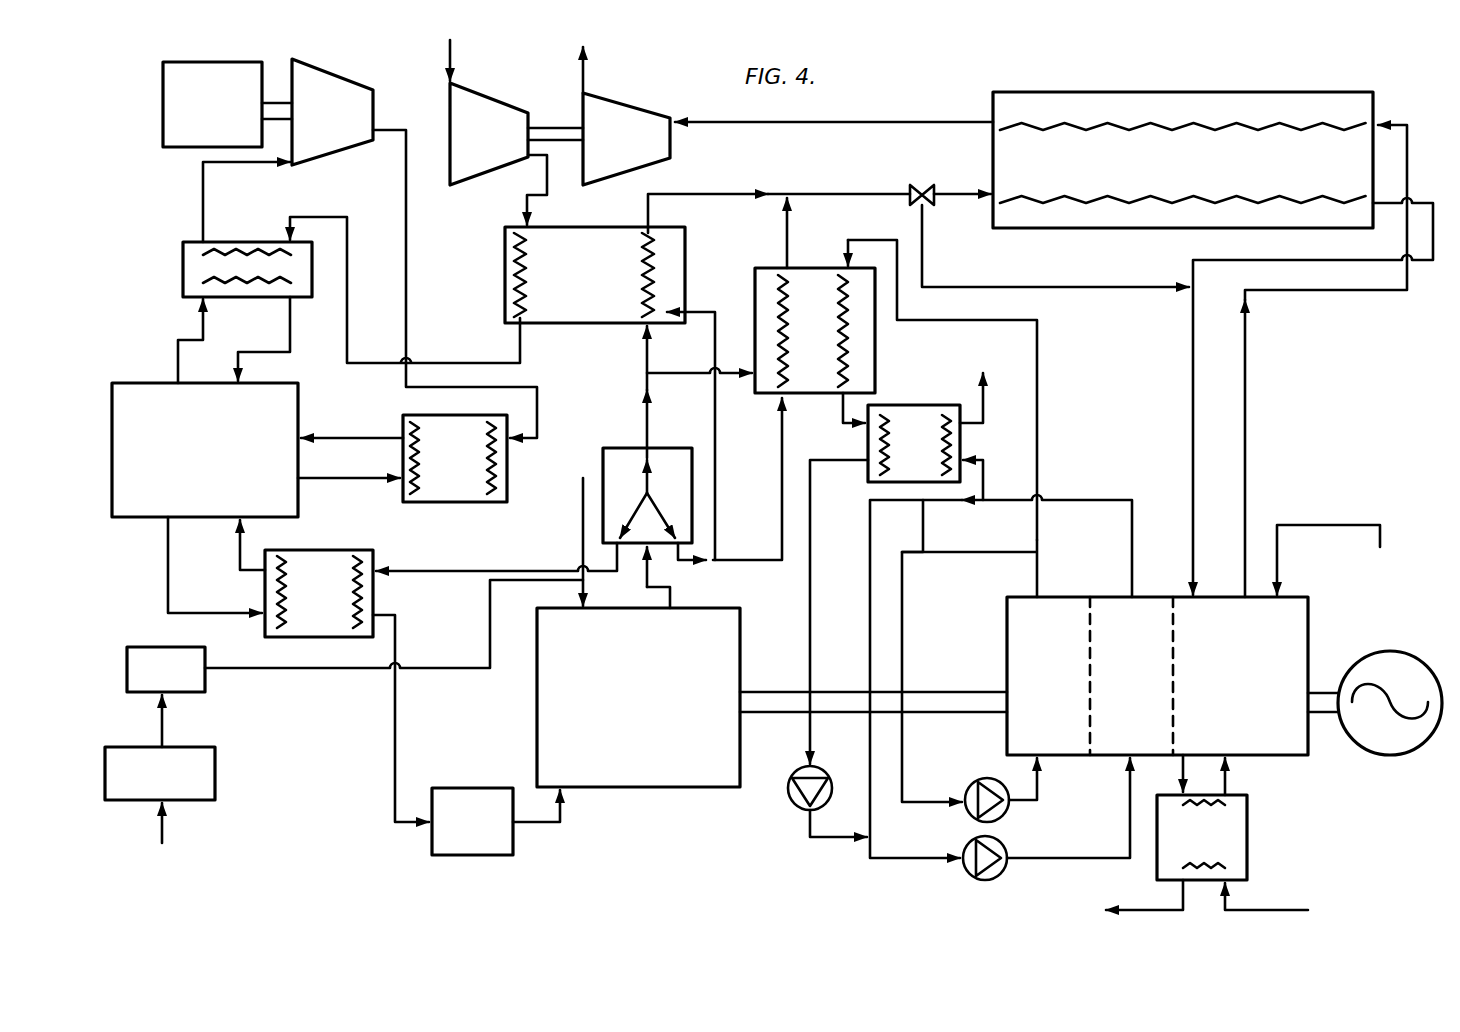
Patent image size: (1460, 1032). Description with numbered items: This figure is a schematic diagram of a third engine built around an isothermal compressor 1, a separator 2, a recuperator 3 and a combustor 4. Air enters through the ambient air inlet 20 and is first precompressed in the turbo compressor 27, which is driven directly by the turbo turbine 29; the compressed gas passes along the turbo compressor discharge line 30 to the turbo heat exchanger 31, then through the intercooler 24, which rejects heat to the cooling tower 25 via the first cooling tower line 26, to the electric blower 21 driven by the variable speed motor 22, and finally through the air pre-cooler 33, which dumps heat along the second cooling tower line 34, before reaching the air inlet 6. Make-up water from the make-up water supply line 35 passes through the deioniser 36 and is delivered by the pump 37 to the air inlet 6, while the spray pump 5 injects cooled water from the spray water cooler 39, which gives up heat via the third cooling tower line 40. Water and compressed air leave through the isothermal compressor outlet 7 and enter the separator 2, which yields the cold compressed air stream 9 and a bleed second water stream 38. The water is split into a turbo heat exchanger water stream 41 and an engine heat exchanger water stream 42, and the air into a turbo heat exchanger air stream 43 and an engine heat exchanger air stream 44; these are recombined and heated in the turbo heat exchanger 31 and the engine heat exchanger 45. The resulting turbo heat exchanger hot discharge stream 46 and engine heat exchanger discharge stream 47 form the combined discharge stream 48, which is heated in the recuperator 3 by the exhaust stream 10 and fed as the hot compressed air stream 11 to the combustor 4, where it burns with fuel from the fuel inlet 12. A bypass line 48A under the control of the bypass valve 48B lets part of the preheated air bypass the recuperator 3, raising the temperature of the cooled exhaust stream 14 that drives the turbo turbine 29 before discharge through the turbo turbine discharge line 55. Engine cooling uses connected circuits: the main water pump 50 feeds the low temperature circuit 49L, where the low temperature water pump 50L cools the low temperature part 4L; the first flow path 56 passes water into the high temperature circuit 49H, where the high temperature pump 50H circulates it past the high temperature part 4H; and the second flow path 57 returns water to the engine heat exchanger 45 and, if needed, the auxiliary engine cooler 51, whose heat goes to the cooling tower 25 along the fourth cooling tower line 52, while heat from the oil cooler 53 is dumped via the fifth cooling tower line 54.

The isothermal compressor 1 is at (634, 718).
The separator 2 is at (624, 500).
The recuperator 3 is at (1202, 185).
The combustor 4 is at (1239, 695).
The high temperature part of the combustor 4H is at (1047, 695).
The low temperature part of the combustor 4L is at (1127, 695).
The spray pump 5 is at (476, 837).
The air inlet 6 is at (583, 528).
The isothermal compressor outlet 7 is at (647, 587).
The cold compressed air stream 9 is at (642, 418).
The exhaust stream 10 is at (1245, 372).
The hot compressed air stream 11 is at (1193, 368).
The fuel inlet 12 is at (1333, 525).
The cooled exhaust stream 14 is at (835, 122).
The ambient air inlet 20 is at (450, 55).
The electric blower 21 is at (344, 118).
The variable speed motor 22 is at (223, 118).
The intercooler 24 is at (196, 242).
The cooling tower 25 is at (213, 465).
The first cooling tower line 26 is at (203, 330).
The turbo compressor 27 is at (500, 148).
The turbo turbine 29 is at (638, 148).
The turbo compressor discharge line 30 is at (527, 205).
The turbo heat exchanger 31 is at (598, 288).
The air pre-cooler 33 is at (463, 471).
The second cooling tower line 34 is at (361, 438).
The make-up water supply line 35 is at (162, 830).
The deioniser 36 is at (169, 788).
The pump 37 is at (176, 685).
The second water stream 38 is at (687, 563).
The spray water cooler 39 is at (324, 608).
The third cooling tower line 40 is at (168, 576).
The turbo heat exchanger water stream 41 is at (715, 415).
The engine heat exchanger water stream 42 is at (782, 482).
The turbo heat exchanger air stream 43 is at (642, 354).
The engine heat exchanger air stream 44 is at (677, 373).
The engine heat exchanger 45 is at (823, 348).
The turbo heat exchanger hot discharge stream 46 is at (726, 194).
The engine heat exchanger discharge stream 47 is at (787, 240).
The combined discharge stream 48 is at (831, 194).
The bypass line 48A is at (1046, 287).
The bypass valve 48B is at (923, 185).
The high temperature circuit 49H is at (1037, 572).
The low temperature circuit 49L is at (1090, 500).
The main water pump 50 is at (788, 795).
The high temperature pump 50H is at (970, 785).
The low temperature water pump 50L is at (967, 874).
The auxiliary engine cooler 51 is at (921, 462).
The fourth cooling tower line 52 is at (980, 380).
The oil cooler 53 is at (1214, 853).
The fifth cooling tower line 54 is at (1280, 910).
The turbo turbine discharge line 55 is at (583, 72).
The first flow path 56 is at (923, 522).
The second flow path 57 is at (1037, 375).